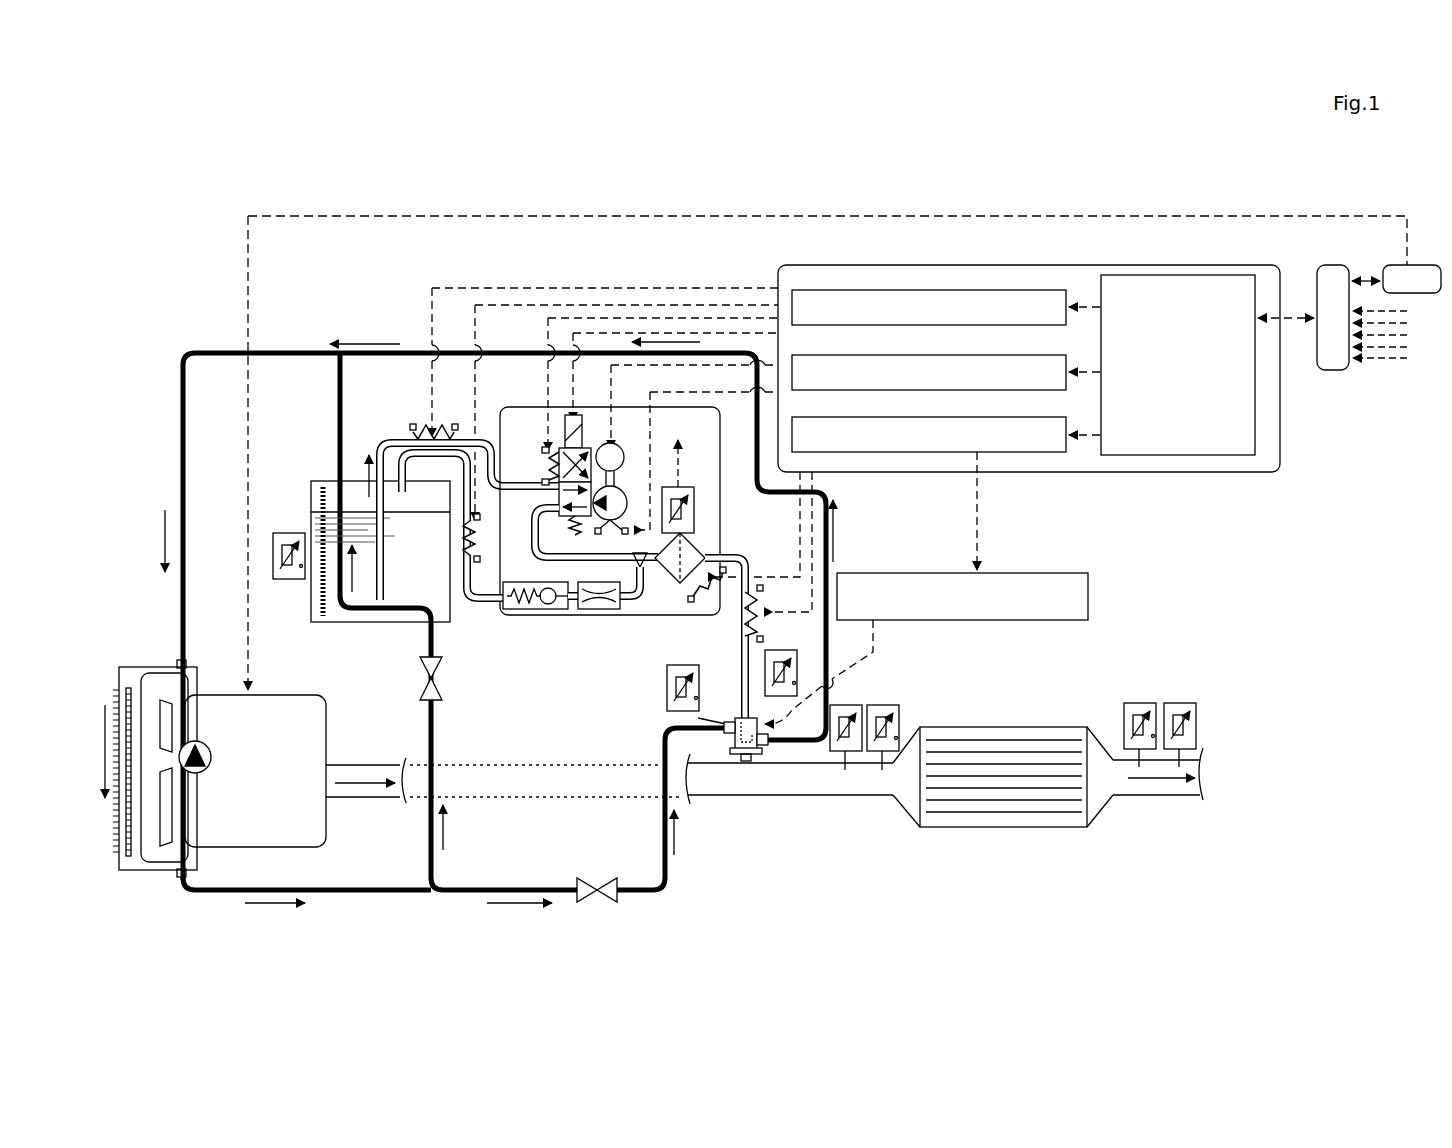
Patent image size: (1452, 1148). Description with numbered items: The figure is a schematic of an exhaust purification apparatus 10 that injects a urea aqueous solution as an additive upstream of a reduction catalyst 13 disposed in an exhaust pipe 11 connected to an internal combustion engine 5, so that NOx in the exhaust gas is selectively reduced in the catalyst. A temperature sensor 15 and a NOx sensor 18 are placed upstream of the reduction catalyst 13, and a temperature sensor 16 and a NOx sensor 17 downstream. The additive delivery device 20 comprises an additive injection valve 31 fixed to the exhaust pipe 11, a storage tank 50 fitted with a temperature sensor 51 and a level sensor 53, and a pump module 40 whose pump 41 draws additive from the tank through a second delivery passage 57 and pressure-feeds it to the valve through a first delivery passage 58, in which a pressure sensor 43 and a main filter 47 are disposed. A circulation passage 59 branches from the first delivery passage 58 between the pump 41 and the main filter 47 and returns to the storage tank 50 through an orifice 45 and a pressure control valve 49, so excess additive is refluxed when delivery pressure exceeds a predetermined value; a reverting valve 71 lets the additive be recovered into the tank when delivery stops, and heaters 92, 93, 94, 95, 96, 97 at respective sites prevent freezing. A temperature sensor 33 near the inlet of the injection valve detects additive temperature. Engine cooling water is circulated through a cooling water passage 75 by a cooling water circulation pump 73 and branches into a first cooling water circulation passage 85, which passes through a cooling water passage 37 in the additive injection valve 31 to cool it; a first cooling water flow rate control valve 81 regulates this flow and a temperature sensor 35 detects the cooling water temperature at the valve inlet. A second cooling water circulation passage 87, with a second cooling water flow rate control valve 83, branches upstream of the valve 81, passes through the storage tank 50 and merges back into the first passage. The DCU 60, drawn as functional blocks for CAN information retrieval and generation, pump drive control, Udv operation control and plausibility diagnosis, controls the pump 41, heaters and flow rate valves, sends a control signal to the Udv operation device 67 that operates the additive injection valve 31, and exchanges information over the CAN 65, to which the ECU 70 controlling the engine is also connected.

The exhaust purification apparatus 10 is at (1278, 195).
The additive delivery device 20 is at (400, 335).
The DCU (dosing control unit) 60 is at (870, 429).
The CAN 65 is at (1333, 372).
The ECU (electronic control unit) 70 is at (1422, 294).
The additive injection valve operation device 67 is at (1046, 570).
The internal combustion engine 5 is at (328, 822).
The cooling water passage 75 is at (200, 688).
The cooling water circulation pump 73 is at (212, 759).
The second cooling water circulation passage 87 is at (436, 736).
The second cooling water flow rate control valve 83 is at (444, 682).
The first cooling water flow rate control valve 81 is at (595, 876).
The first cooling water circulation passage 85 is at (828, 502).
The storage tank 50 is at (370, 622).
The level sensor 53 is at (324, 622).
The temperature sensor 51 is at (322, 595).
The second delivery passage 57 is at (478, 442).
The circulation passage 59 is at (465, 600).
The heater 93 is at (478, 566).
The heater 92 is at (410, 432).
The pump module 40 is at (580, 616).
The reverting valve 71 is at (582, 418).
The heater 94 is at (548, 458).
The pump 41 is at (617, 486).
The heater 95 is at (611, 522).
The pressure sensor 43 is at (698, 501).
The main filter 47 is at (706, 552).
The first delivery passage 58 is at (742, 642).
The heater 97 is at (745, 626).
The heater 96 is at (694, 591).
The pressure control valve 49 is at (530, 610).
The orifice 45 is at (604, 610).
The temperature sensor 33 is at (784, 656).
The temperature sensor 35 is at (667, 688).
The additive injection valve 31 is at (735, 718).
The cooling water passage 37 is at (737, 741).
The exhaust pipe 11 is at (780, 798).
The reduction catalyst 13 is at (1012, 726).
The NOx sensor 18 is at (850, 704).
The temperature sensor 15 is at (899, 716).
The temperature sensor 16 is at (1124, 722).
The NOx sensor 17 is at (1194, 716).